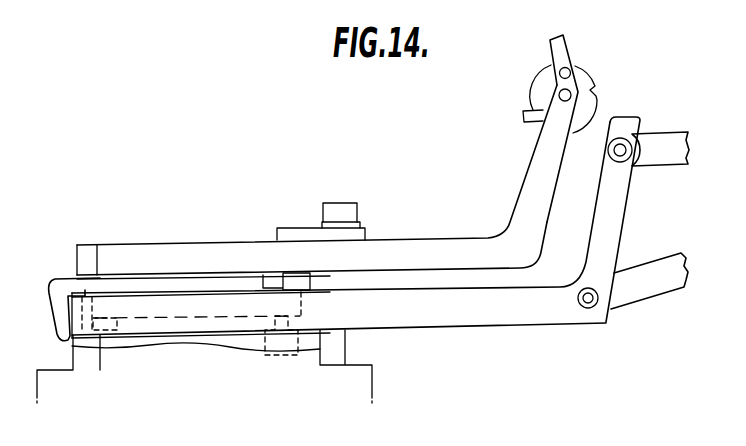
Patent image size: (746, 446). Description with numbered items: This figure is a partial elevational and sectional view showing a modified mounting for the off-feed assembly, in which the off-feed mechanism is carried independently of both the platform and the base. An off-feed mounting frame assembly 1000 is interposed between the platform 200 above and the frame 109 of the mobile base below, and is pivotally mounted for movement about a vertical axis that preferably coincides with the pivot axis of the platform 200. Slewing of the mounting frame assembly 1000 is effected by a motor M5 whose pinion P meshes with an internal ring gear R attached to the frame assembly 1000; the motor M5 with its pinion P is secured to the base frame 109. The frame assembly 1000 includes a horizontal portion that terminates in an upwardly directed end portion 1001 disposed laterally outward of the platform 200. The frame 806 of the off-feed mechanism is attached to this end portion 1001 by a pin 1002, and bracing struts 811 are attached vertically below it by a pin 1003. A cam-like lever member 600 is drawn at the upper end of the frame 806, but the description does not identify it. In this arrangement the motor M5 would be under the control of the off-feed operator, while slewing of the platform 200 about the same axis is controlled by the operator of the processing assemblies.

The cam lever assembly 600 is at (577, 68).
The pin 1002 is at (621, 138).
The frame of the off-feed mechanism 806 is at (664, 124).
The upwardly directed end portion 1001 is at (603, 202).
The platform 200 is at (420, 253).
The frame of the mobile base 109 is at (330, 347).
The off-feed mounting frame assembly 1000 is at (540, 310).
The pin 1003 is at (593, 308).
The bracing struts 811 is at (662, 278).
The pinion P is at (305, 316).
The motor M5 is at (283, 360).
The internal ring gear R is at (222, 322).